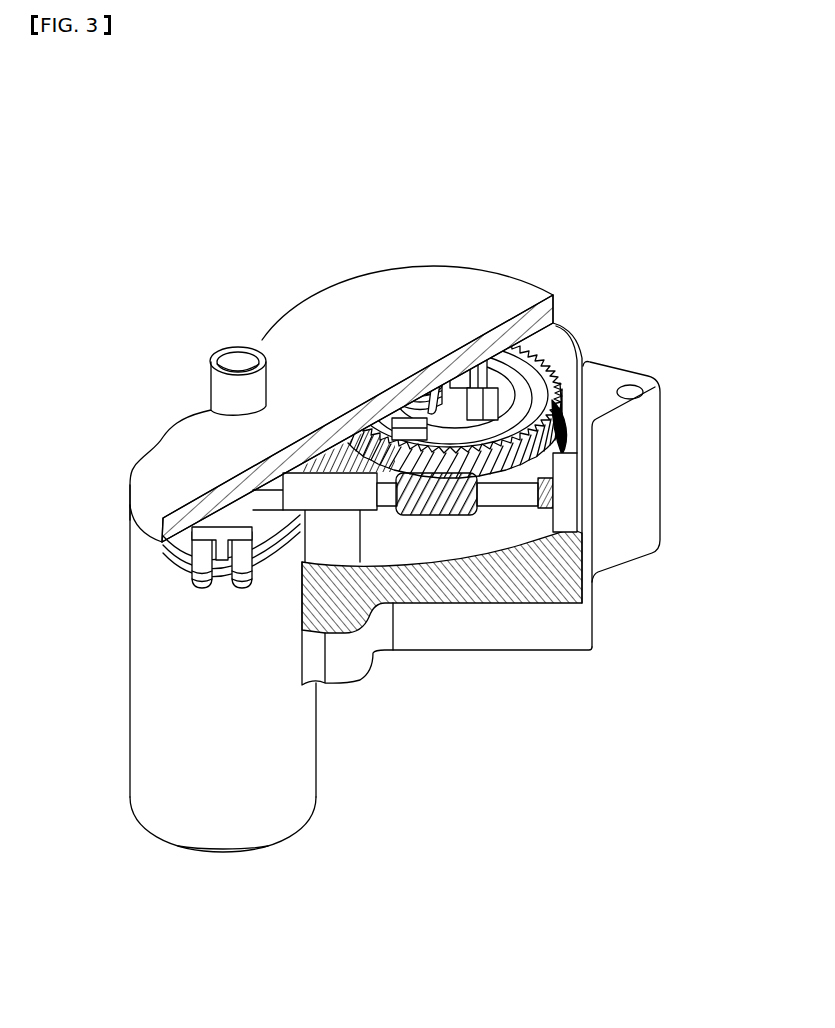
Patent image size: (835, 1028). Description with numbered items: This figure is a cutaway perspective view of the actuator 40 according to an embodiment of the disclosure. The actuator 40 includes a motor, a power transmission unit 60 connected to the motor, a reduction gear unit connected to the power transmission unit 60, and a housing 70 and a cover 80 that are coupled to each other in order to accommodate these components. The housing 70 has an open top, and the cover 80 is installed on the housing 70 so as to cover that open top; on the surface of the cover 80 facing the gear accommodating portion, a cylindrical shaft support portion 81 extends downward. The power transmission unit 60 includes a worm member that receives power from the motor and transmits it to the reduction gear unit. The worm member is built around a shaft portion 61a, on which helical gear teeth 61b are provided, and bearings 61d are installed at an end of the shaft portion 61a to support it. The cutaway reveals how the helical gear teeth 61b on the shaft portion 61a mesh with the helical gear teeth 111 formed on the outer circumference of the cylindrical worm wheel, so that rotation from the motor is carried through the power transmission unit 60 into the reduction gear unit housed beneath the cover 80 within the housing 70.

The actuator 40 is at (287, 123).
The power transmission unit 60 is at (490, 514).
The shaft portion 61a is at (523, 497).
The helical gear teeth 61b is at (414, 515).
The bearings 61d is at (570, 508).
The housing 70 is at (652, 437).
The cover 80 is at (504, 272).
The shaft support portion 81 is at (440, 378).
The helical gear teeth 111 is at (552, 368).